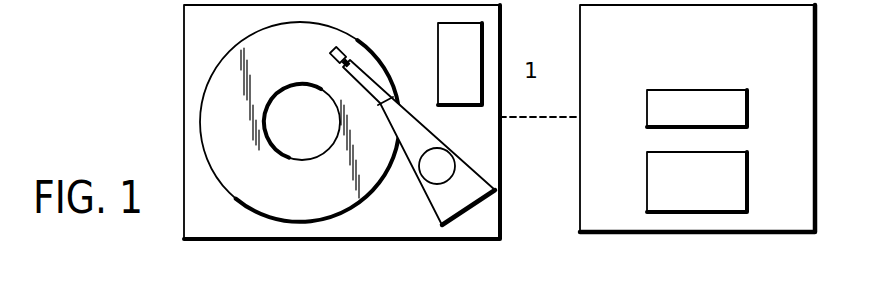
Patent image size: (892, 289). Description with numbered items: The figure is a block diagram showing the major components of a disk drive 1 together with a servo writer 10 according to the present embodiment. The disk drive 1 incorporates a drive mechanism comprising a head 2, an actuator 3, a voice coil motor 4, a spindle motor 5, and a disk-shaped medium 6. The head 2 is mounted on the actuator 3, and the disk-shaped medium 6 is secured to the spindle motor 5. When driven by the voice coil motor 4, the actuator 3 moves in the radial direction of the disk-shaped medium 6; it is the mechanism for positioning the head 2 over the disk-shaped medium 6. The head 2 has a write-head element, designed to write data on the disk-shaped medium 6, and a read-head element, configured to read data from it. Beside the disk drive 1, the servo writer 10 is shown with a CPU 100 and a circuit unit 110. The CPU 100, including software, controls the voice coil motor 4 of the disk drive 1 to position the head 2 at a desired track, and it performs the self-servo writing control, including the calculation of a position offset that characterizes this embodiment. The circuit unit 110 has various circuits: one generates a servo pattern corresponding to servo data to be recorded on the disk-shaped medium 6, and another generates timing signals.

The disk drive 1 is at (500, 22).
The head 2 is at (327, 60).
The actuator 3 is at (417, 124).
The voice coil motor 4 is at (473, 192).
The spindle motor 5 is at (300, 160).
The disk-shaped medium 6 is at (215, 73).
The servo writer 10 is at (815, 48).
The CPU 100 is at (747, 105).
The circuit unit 110 is at (747, 178).